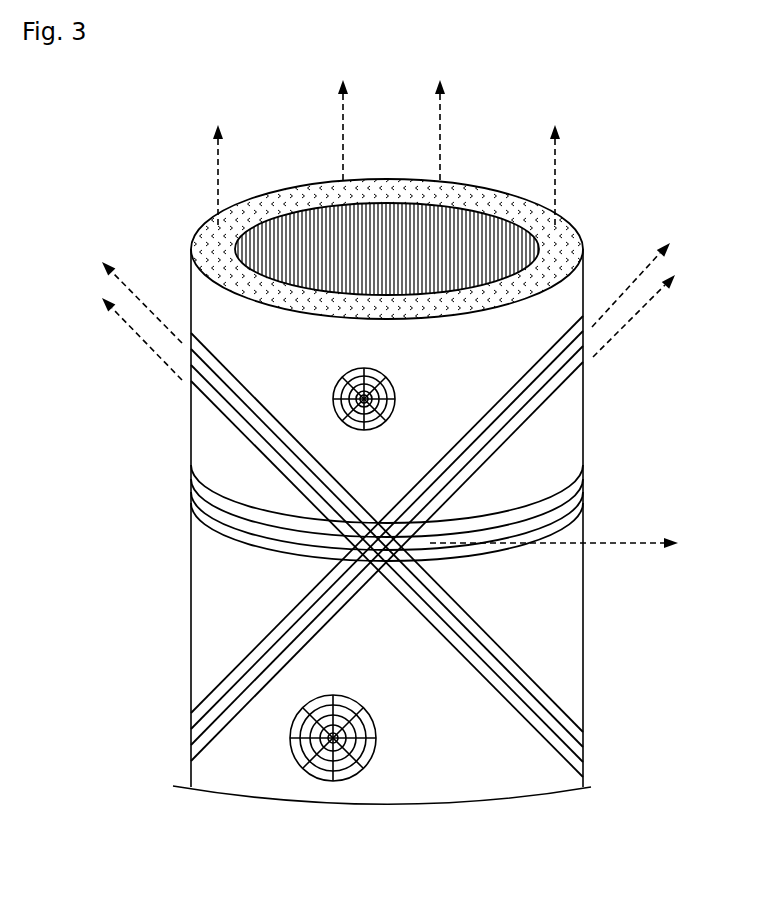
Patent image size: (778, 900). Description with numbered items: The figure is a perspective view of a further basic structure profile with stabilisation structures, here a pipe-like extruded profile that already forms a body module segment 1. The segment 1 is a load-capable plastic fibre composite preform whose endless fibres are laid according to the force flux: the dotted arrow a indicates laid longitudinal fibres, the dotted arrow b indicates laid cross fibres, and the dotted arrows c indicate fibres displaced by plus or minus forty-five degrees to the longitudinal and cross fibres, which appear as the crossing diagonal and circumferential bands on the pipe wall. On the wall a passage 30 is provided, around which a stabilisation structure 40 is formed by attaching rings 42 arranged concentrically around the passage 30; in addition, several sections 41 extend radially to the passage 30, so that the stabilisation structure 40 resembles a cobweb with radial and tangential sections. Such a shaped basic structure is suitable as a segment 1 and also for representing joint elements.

The body module segment 1 is at (112, 651).
The passage 30 is at (336, 735).
The stabilisation structure 40 is at (386, 766).
The section 41 is at (330, 772).
The ring 42 is at (293, 755).